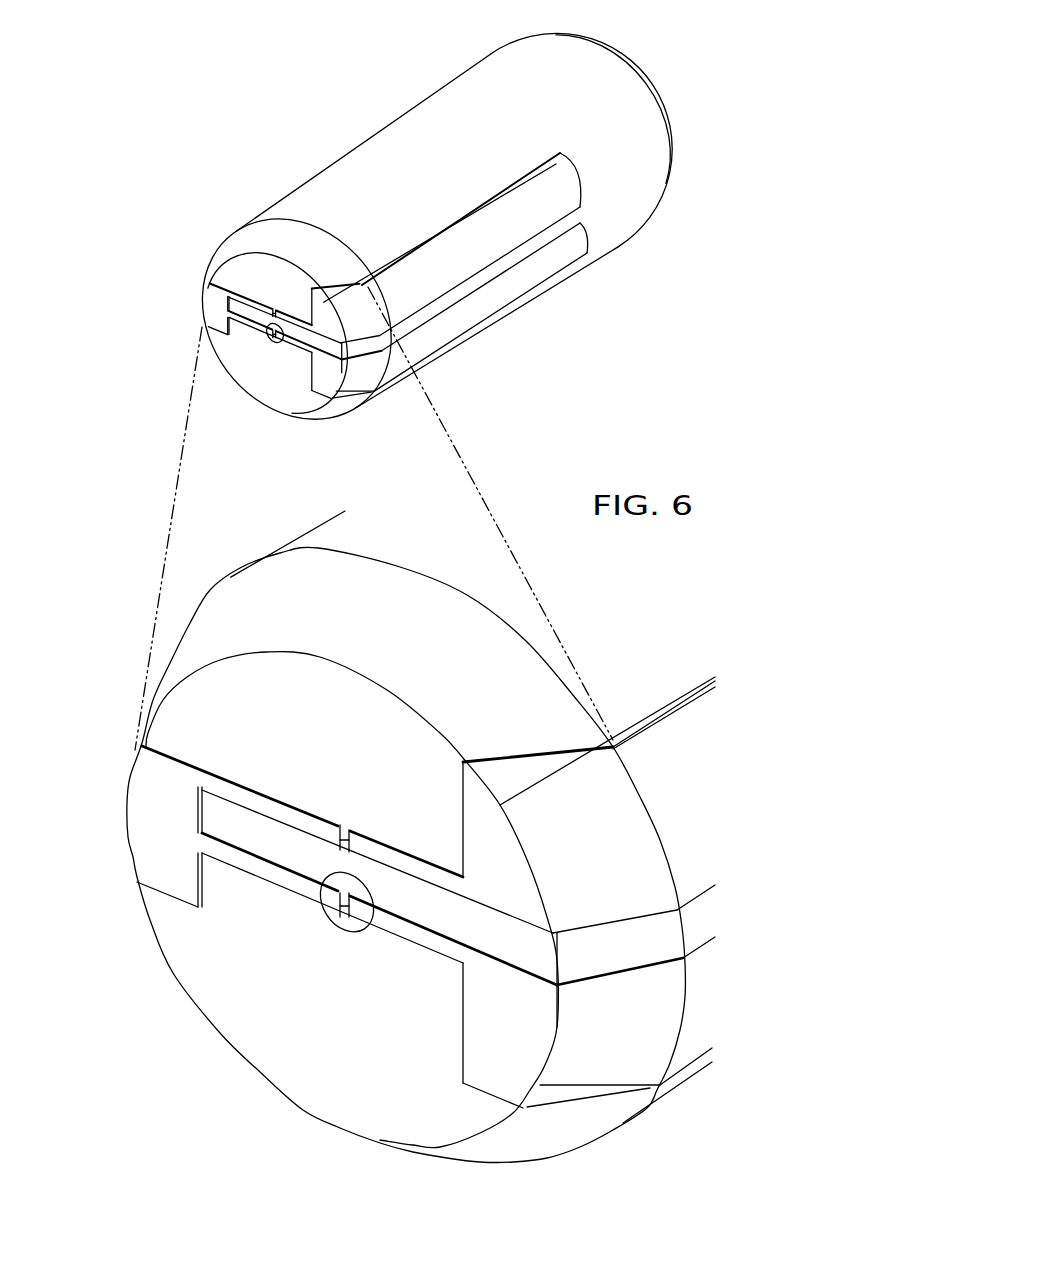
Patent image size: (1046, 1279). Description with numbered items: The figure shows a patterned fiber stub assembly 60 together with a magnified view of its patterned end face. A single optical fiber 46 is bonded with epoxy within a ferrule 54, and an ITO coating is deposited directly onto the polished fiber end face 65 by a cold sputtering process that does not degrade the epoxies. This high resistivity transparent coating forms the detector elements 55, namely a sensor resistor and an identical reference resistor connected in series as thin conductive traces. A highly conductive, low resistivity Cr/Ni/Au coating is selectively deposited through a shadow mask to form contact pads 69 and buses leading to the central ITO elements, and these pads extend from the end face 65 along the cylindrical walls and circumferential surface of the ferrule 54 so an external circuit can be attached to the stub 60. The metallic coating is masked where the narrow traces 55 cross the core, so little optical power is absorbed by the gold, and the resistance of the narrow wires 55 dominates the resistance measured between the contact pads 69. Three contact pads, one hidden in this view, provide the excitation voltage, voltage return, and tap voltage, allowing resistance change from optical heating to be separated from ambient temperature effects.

The ferrule 54 is at (445, 107).
The contact pads 69 is at (462, 243).
The fiber end face 65 is at (272, 363).
The fiber stub assembly 60 is at (222, 1036).
The optical fiber 46 is at (368, 873).
The detector elements 55 is at (337, 828).